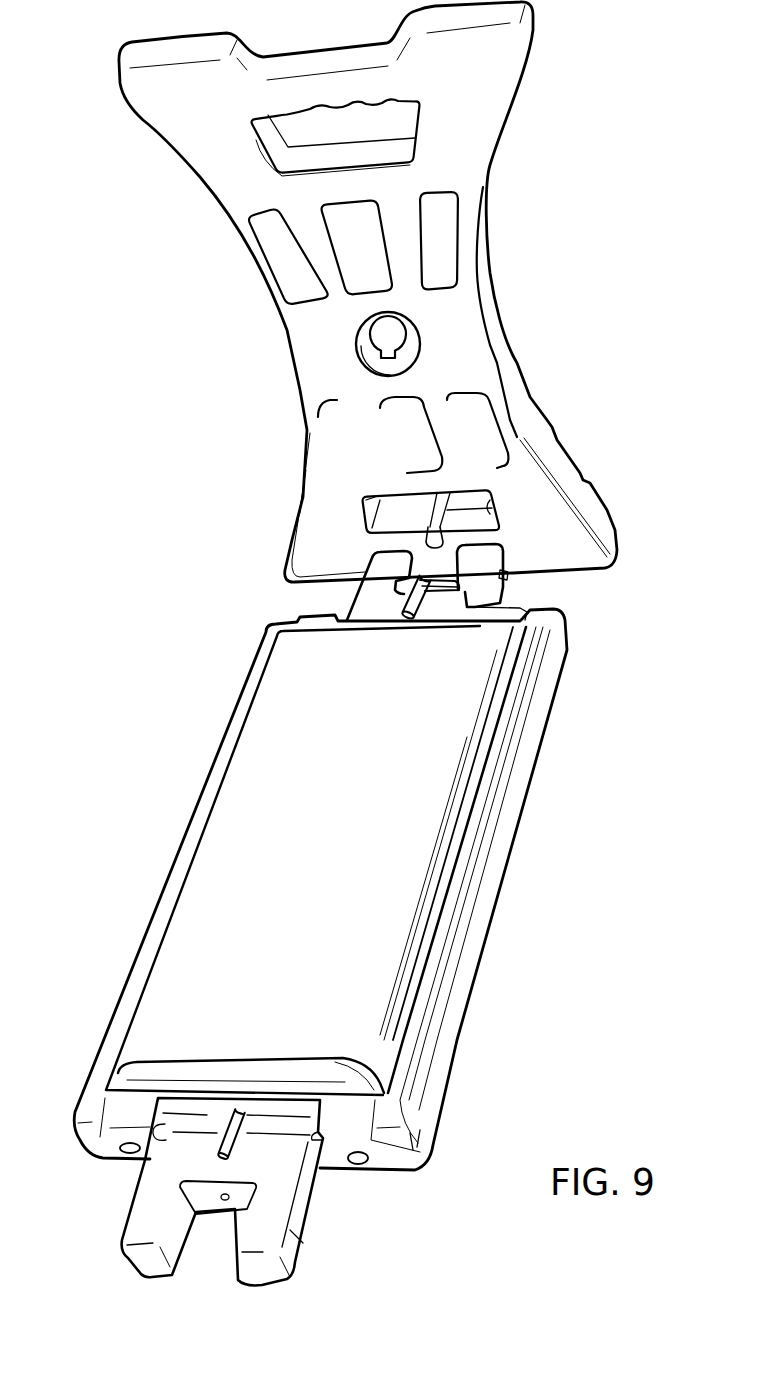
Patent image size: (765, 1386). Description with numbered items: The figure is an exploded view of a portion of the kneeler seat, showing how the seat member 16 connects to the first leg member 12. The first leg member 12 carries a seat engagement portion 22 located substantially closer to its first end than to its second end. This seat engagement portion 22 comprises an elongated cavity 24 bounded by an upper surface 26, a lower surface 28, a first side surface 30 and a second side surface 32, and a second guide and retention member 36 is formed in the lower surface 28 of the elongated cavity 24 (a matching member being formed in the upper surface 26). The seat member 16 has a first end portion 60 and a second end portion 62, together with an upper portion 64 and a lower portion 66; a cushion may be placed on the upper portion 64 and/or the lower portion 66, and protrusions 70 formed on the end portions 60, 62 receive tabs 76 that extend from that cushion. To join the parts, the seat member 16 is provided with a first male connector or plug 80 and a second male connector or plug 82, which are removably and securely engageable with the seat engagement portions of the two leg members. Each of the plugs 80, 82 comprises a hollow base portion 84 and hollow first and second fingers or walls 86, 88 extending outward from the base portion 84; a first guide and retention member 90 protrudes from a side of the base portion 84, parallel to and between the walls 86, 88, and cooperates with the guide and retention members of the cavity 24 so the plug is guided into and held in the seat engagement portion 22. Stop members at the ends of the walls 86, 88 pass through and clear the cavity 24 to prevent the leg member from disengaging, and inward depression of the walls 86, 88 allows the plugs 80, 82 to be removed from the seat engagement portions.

The first leg member 12 is at (487, 330).
The seat member 16 is at (477, 888).
The seat engagement portion 22 is at (403, 452).
The elongated cavity 24 is at (398, 515).
The upper surface 26 is at (462, 490).
The lower surface 28 is at (480, 523).
The first side surface 30 is at (370, 497).
The second side surface 32 is at (492, 500).
The second guide and retention member 36 is at (433, 544).
The first end portion 60 is at (557, 640).
The second end portion 62 is at (427, 1122).
The upper portion 64 is at (442, 978).
The lower portion 66 is at (460, 1050).
The protrusions 70 is at (127, 1160).
The tabs 76 is at (97, 1140).
The first male connector or plug 80 is at (363, 570).
The second male connector or plug 82 is at (330, 1267).
The hollow base portion 84 is at (452, 603).
The first finger or wall 86 is at (143, 1272).
The second finger or wall 88 is at (248, 1277).
The first guide and retention member 90 is at (403, 603).